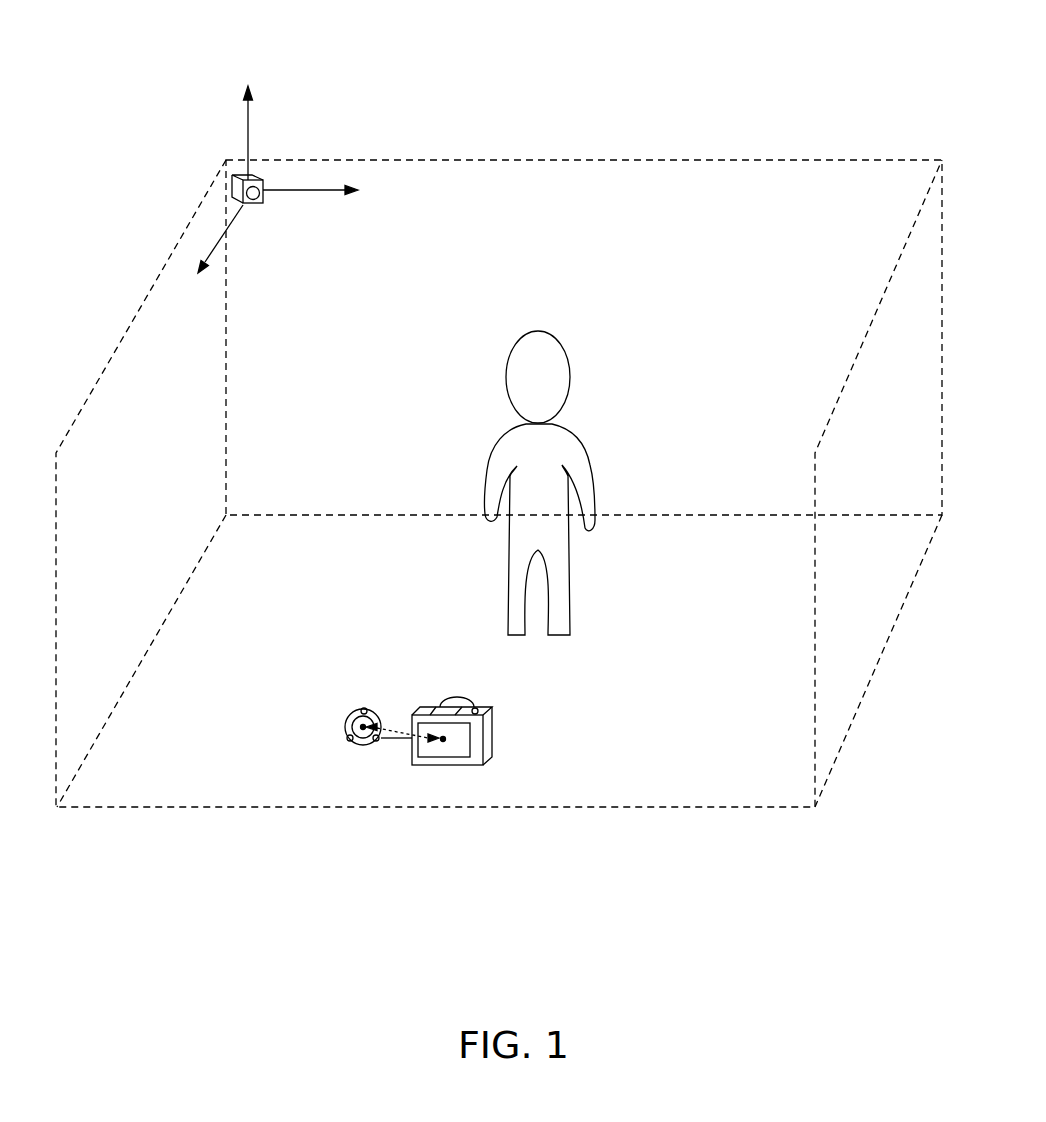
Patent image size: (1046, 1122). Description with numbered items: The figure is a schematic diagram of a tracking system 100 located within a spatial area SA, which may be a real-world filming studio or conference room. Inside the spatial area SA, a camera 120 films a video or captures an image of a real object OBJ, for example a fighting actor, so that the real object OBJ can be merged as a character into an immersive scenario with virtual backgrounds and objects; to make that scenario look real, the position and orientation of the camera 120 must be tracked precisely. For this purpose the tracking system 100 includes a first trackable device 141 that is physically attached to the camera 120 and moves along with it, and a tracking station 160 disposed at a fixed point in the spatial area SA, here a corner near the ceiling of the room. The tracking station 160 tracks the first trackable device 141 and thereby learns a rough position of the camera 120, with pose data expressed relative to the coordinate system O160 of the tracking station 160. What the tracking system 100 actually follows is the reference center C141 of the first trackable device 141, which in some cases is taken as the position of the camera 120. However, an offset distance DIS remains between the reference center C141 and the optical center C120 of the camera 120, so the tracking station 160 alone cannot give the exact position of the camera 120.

The tracking system 100 is at (183, 32).
The spatial area SA is at (783, 160).
The coordinate system of the tracking station O160 is at (248, 128).
The tracking station 160 is at (265, 197).
The real object OBJ is at (569, 360).
The first trackable device 141 is at (351, 712).
The reference center of the first trackable device C141 is at (358, 737).
The offset distance DIS is at (412, 732).
The camera 120 is at (492, 728).
The optical center of the camera C120 is at (445, 741).